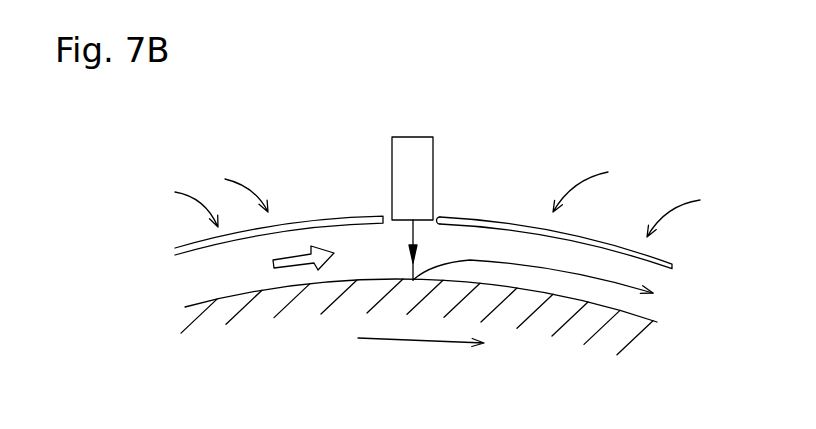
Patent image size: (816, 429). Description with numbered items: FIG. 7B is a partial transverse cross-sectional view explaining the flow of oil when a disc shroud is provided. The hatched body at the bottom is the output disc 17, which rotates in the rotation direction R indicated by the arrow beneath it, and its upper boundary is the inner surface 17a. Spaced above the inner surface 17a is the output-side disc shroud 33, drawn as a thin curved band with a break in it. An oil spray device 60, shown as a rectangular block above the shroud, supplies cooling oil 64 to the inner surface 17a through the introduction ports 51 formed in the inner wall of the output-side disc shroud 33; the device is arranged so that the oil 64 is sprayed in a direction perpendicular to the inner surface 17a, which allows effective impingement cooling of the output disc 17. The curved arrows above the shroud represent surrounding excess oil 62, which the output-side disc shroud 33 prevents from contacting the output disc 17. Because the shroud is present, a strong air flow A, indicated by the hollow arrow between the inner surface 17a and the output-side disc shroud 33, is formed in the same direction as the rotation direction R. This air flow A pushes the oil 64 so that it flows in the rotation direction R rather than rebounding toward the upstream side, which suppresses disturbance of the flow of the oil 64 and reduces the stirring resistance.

The output disc 17 is at (391, 247).
The inner surface 17a is at (367, 282).
The output-side disc shroud 33 is at (580, 238).
The introduction ports 51 is at (437, 220).
The oil spray device 60 is at (415, 148).
The surrounding excess oil 62 is at (243, 181).
The cooling oil 64 is at (413, 237).
The air flow A is at (297, 253).
The rotation direction R is at (413, 340).